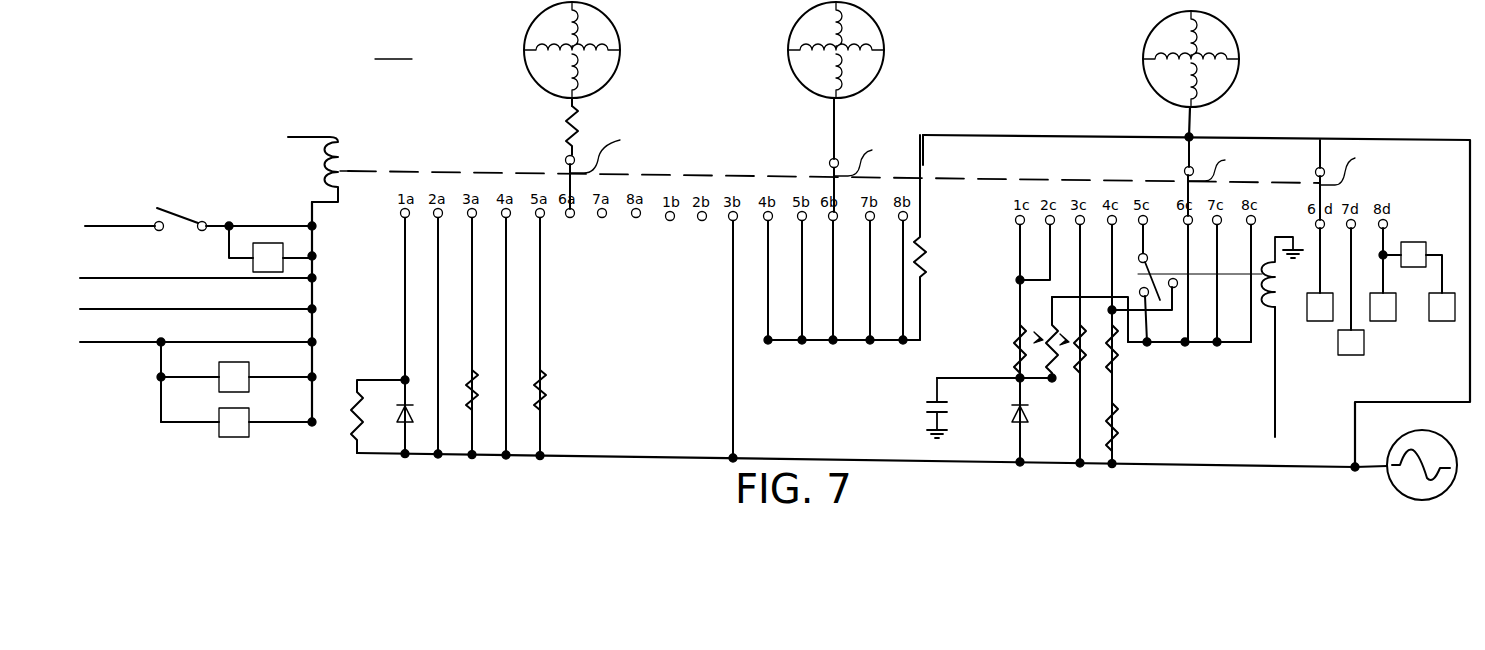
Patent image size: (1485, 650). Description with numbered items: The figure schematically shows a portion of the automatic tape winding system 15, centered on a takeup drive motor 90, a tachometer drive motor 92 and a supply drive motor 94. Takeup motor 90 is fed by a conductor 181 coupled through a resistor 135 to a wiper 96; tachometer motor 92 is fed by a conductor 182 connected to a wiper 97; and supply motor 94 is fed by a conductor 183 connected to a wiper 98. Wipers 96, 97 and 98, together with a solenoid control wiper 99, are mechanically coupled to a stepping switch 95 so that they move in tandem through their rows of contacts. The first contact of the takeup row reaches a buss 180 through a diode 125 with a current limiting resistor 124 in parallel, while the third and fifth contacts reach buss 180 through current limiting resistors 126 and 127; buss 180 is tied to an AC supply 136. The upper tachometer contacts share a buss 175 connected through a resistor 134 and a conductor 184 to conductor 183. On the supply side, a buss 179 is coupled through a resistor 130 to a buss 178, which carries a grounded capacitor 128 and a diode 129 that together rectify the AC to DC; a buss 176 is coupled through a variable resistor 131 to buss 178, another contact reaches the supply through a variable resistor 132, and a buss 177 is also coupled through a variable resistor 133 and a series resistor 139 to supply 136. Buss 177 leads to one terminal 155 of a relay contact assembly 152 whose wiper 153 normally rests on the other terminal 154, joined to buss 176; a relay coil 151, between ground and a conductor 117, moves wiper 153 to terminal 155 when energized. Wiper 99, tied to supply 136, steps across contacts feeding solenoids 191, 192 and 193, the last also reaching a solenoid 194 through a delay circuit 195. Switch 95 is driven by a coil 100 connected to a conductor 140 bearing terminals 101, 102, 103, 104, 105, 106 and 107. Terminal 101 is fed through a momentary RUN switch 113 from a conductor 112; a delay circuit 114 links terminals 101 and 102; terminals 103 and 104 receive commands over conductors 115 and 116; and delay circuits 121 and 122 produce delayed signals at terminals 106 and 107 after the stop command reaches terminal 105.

The control system 15 is at (393, 46).
The takeup drive motor 90 is at (612, 32).
The tachometer drive motor 92 is at (882, 30).
The supply drive motor 94 is at (1238, 36).
The mechanical stepping switch 95 is at (430, 171).
The wiper 96 is at (609, 169).
The wiper 97 is at (857, 172).
The wiper 98 is at (1210, 178).
The solenoid control wiper 99 is at (1342, 179).
The coil 100 is at (338, 150).
The terminal 101 is at (316, 226).
The terminal 102 is at (316, 256).
The terminal 103 is at (316, 278).
The terminal 104 is at (316, 309).
The terminal 105 is at (316, 342).
The terminal 106 is at (316, 377).
The terminal 107 is at (313, 425).
The conductor 112 is at (100, 226).
The momentary RUN switch 113 is at (178, 210).
The delay circuit 114 is at (253, 262).
The conductor 115 is at (140, 278).
The conductor 116 is at (140, 309).
The conductor 117 is at (140, 342).
The delay circuit 121 is at (222, 364).
The delay circuit 122 is at (222, 410).
The current limiting resistor 124 is at (378, 455).
The diode 125 is at (408, 456).
The current limiting resistor 126 is at (478, 400).
The current limiting resistor 127 is at (546, 396).
The capacitor 128 is at (930, 416).
The diode 129 is at (1012, 414).
The resistor 130 is at (1016, 336).
The variable resistor 131 is at (1046, 328).
The variable resistor 132 is at (1148, 432).
The variable resistor 133 is at (1138, 400).
The resistor 134 is at (926, 244).
The resistor 135 is at (577, 128).
The AC supply 136 is at (1388, 483).
The series resistor 139 is at (1105, 432).
The conductor 140 is at (312, 214).
The relay coil 151 is at (1270, 262).
The relay contact assembly 152 is at (1140, 262).
The wiper 153 is at (1146, 264).
The terminal 154 is at (1139, 292).
The terminal 155 is at (1177, 288).
The buss 175 is at (810, 342).
The buss 176 is at (1175, 346).
The buss 177 is at (1146, 344).
The buss 178 is at (1030, 381).
The buss 179 is at (1022, 280).
The buss 180 is at (485, 457).
The conductor 181 is at (570, 103).
The conductor 182 is at (832, 110).
The conductor 183 is at (1193, 118).
The conductor 184 is at (1046, 135).
The solenoid 191 is at (1318, 323).
The solenoid 192 is at (1350, 357).
The solenoid 193 is at (1386, 323).
The solenoid 194 is at (1442, 322).
The delay circuit 195 is at (1418, 242).